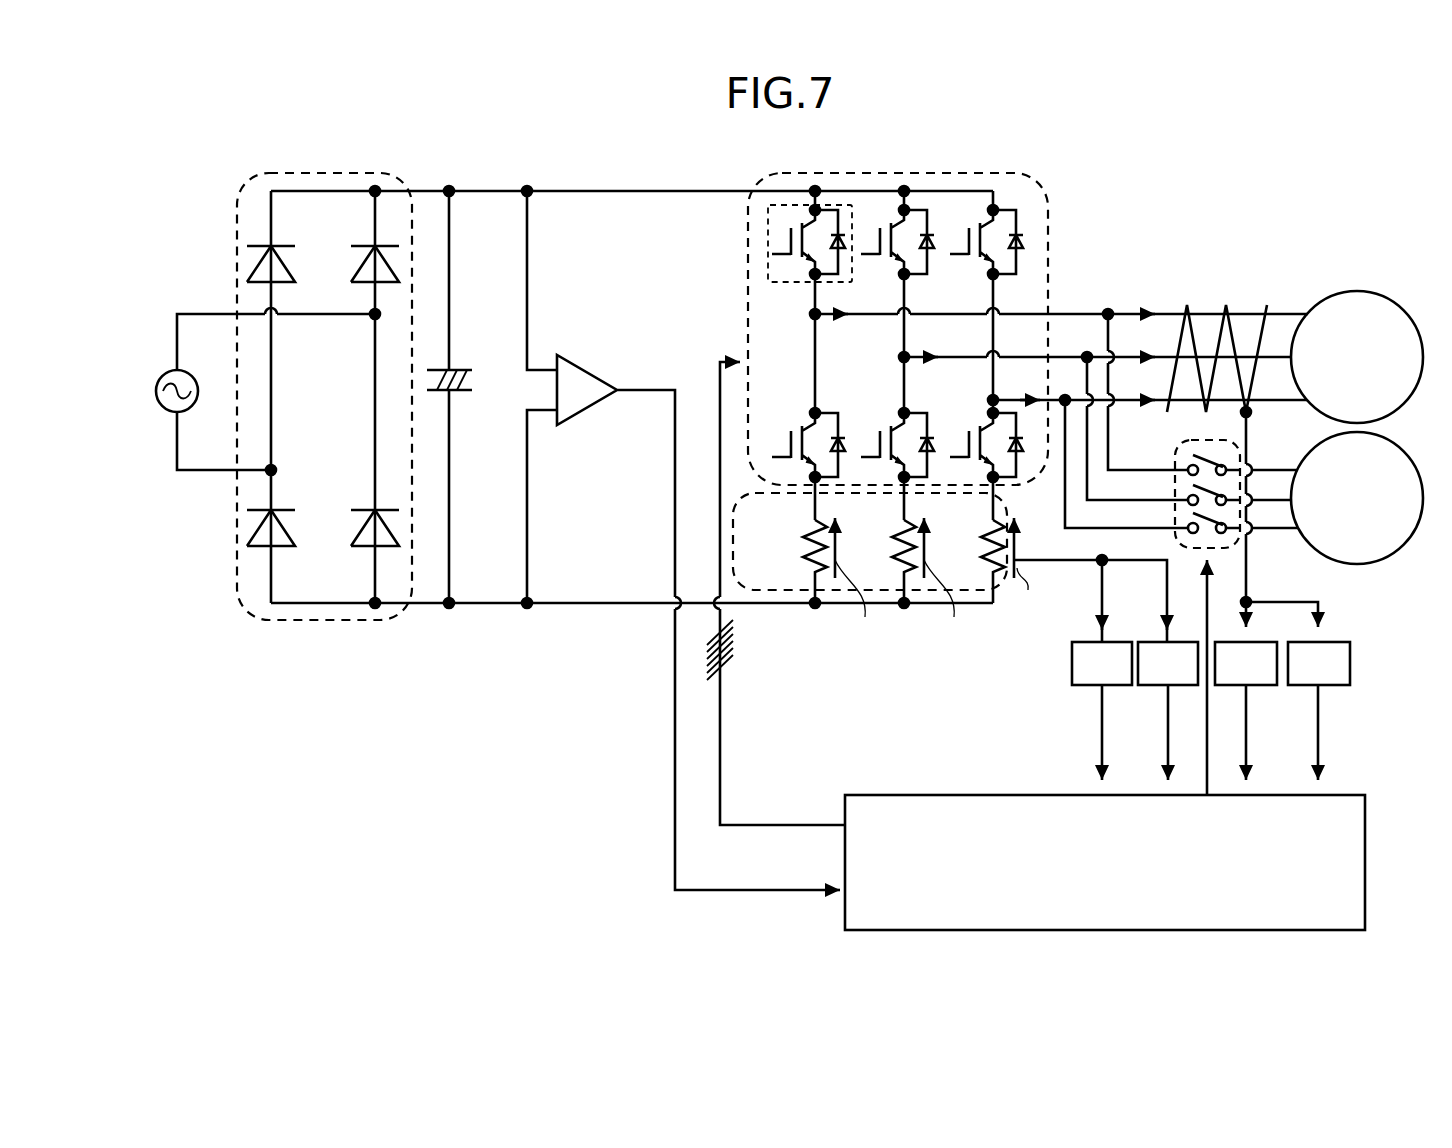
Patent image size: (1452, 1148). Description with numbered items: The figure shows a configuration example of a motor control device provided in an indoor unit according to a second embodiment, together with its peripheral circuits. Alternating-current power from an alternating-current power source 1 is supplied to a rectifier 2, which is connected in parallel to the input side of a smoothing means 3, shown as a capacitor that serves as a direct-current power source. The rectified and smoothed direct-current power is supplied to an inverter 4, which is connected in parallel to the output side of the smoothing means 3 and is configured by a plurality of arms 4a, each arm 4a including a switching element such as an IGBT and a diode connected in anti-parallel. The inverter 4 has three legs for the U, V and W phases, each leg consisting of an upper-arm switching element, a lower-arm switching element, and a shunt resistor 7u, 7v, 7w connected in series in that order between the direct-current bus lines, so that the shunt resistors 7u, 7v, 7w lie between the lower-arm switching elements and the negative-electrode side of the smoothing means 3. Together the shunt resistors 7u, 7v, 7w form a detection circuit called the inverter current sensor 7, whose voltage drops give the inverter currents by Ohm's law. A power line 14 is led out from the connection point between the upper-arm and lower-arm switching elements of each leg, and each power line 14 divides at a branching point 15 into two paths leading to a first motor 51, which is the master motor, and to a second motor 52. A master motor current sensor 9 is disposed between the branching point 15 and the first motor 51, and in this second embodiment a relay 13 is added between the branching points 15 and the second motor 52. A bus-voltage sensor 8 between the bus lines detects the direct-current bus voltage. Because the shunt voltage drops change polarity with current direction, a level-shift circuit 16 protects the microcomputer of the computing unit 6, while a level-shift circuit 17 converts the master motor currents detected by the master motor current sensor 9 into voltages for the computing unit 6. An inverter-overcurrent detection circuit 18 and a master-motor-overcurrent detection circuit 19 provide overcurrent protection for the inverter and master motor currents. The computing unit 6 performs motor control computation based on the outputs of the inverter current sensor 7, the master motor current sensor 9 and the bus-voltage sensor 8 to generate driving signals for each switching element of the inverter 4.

The alternating-current power source 1 is at (165, 411).
The rectifier 2 is at (395, 181).
The smoothing means 3 is at (456, 393).
The inverter 4 is at (899, 346).
The arm 4a is at (766, 260).
The computing unit 6 is at (972, 795).
The inverter current sensor 7 is at (890, 579).
The shunt resistor 7u is at (806, 523).
The shunt resistor 7v is at (895, 523).
The shunt resistor 7w is at (984, 523).
The bus-voltage sensor 8 is at (582, 365).
The master motor current sensor 9 is at (1228, 305).
The relay 13 is at (1175, 458).
The power line 14 is at (1155, 222).
The branching point 15 is at (1048, 400).
The level-shift circuit 16 is at (1117, 642).
The level-shift circuit 17 is at (1222, 685).
The inverter-overcurrent detection circuit 18 is at (1184, 642).
The master-motor-overcurrent detection circuit 19 is at (1297, 685).
The first motor 51 is at (1355, 292).
The second motor 52 is at (1355, 565).